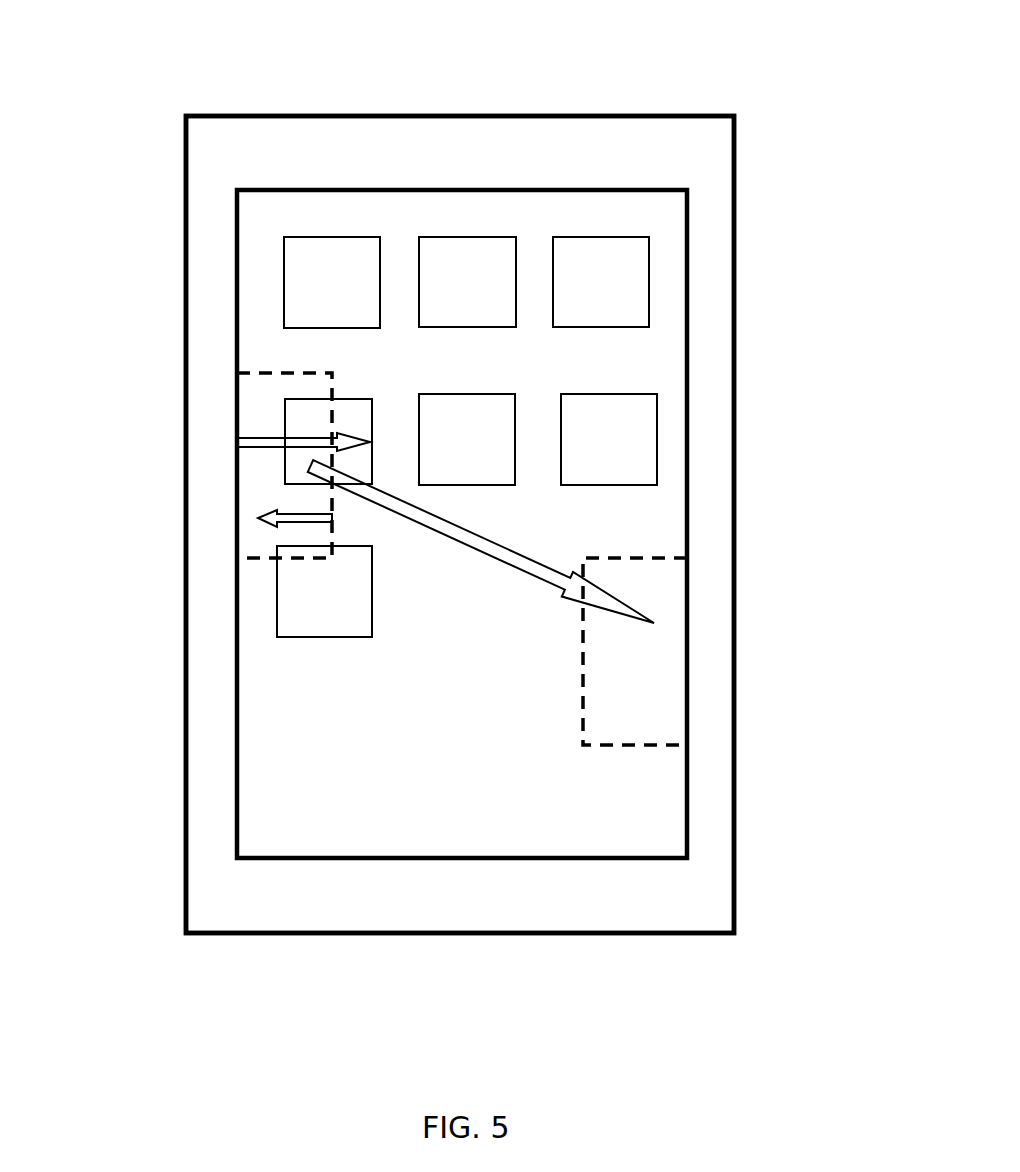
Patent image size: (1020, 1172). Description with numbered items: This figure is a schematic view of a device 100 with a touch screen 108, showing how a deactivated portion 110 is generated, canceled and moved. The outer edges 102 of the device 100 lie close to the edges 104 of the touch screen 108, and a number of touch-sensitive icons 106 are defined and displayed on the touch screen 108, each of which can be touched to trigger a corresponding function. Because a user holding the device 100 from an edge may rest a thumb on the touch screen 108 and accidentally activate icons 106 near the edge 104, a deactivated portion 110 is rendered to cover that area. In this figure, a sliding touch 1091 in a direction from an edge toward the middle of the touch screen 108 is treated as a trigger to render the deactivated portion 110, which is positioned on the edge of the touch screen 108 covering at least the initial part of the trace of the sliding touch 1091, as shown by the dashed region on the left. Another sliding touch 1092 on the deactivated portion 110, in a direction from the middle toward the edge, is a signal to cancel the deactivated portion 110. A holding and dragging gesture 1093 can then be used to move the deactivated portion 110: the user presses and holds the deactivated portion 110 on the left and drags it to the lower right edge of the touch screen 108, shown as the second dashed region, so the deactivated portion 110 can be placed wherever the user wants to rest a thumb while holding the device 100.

The device 100 is at (652, 96).
The edges of the device 102 is at (736, 229).
The edges of the touch screen 104 is at (690, 387).
The touch-sensitive icons 106 is at (608, 448).
The touch screen 108 is at (645, 809).
The deactivated portion 110 is at (258, 538).
The sliding touch 1091 is at (258, 438).
The sliding touch 1092 is at (283, 510).
The holding and dragging touching gesture 1093 is at (583, 590).